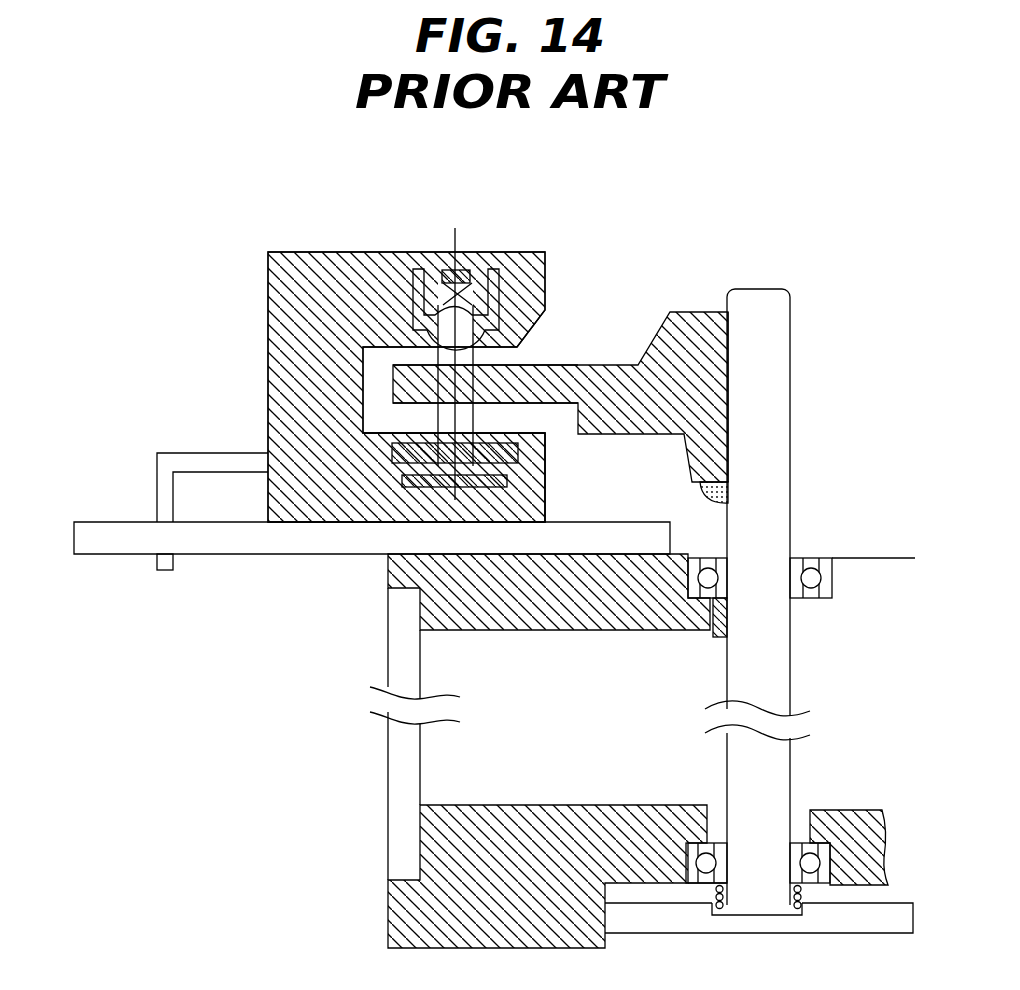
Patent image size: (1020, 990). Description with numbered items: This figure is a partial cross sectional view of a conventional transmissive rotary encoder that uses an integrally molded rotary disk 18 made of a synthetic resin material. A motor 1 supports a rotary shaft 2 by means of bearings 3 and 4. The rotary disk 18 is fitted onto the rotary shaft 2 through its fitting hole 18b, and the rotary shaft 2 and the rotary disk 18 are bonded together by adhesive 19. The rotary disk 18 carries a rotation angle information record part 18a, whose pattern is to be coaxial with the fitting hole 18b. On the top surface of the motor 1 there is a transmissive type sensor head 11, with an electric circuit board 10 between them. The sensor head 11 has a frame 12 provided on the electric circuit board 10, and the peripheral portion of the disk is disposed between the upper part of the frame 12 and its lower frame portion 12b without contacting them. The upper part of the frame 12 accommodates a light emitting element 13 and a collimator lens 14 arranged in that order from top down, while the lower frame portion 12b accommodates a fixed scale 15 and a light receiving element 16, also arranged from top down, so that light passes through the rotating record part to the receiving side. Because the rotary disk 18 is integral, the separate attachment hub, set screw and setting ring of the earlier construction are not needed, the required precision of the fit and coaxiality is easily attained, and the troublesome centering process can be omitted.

The motor 1 is at (384, 905).
The rotary shaft 2 is at (768, 300).
The bearing 3 is at (835, 585).
The bearing 4 is at (828, 868).
The electric circuit board 10 is at (110, 533).
The sensor head 11 is at (262, 329).
The frame 12 is at (310, 252).
The lower frame portion 12b is at (538, 482).
The light emitting element 13 is at (452, 270).
The collimator lens 14 is at (487, 321).
The fixed scale 15 is at (408, 452).
The light receiving element 16 is at (413, 483).
The rotary disk 18 is at (612, 364).
The rotation angle information record part 18a is at (450, 388).
The fitting hole 18b is at (735, 347).
The adhesive 19 is at (735, 490).